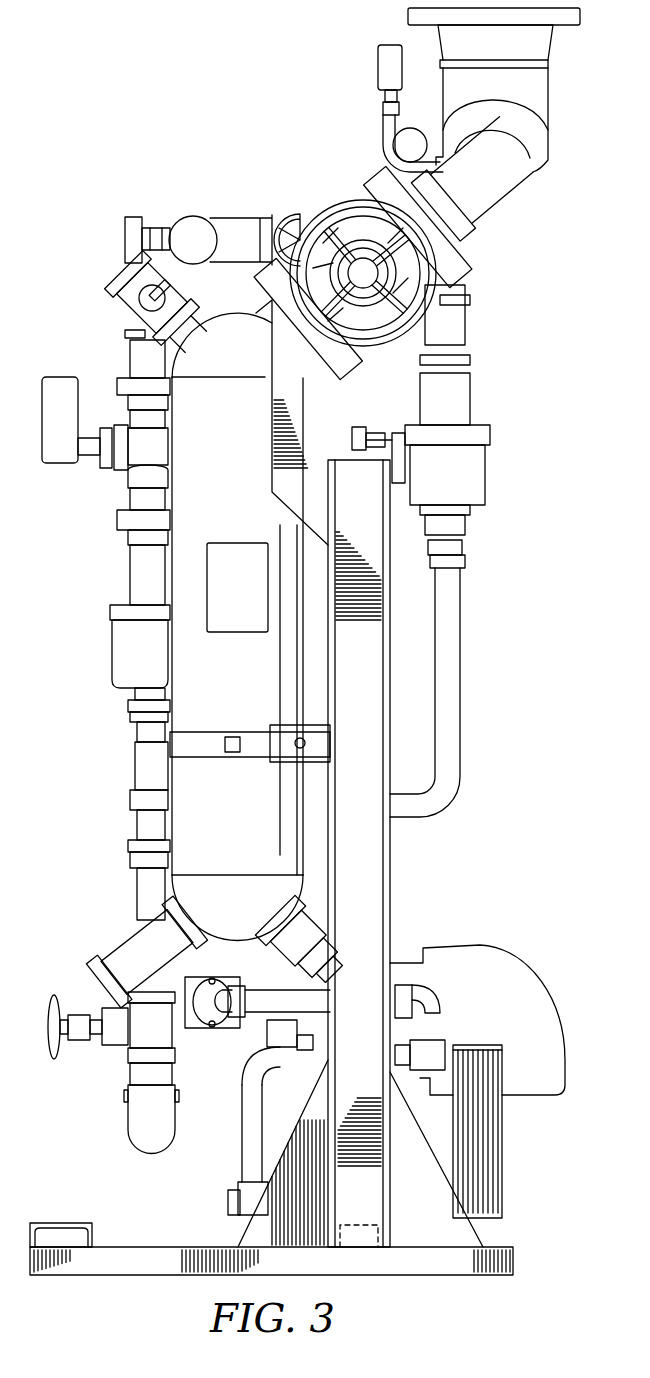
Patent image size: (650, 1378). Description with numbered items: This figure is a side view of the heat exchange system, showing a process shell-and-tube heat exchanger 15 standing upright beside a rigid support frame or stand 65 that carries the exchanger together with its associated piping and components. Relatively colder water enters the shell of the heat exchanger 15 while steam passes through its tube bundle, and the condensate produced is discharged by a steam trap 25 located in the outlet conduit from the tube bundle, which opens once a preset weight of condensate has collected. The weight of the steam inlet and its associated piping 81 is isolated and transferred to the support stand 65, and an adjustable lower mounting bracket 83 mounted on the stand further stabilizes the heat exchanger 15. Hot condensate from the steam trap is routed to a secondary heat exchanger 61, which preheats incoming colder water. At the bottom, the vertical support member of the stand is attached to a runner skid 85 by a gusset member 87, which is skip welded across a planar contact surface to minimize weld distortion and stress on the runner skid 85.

The second process shell-and-tube heat exchanger 15 is at (168, 585).
The steam trap 25 is at (565, 1047).
The secondary heat exchanger 61 is at (505, 1150).
The rigid support frame or stand 65 is at (392, 856).
The steam inlet piping 81 is at (392, 348).
The adjustable lower mounting bracket 83 is at (205, 727).
The runner skid 85 is at (440, 1275).
The gusset member 87 is at (483, 1228).